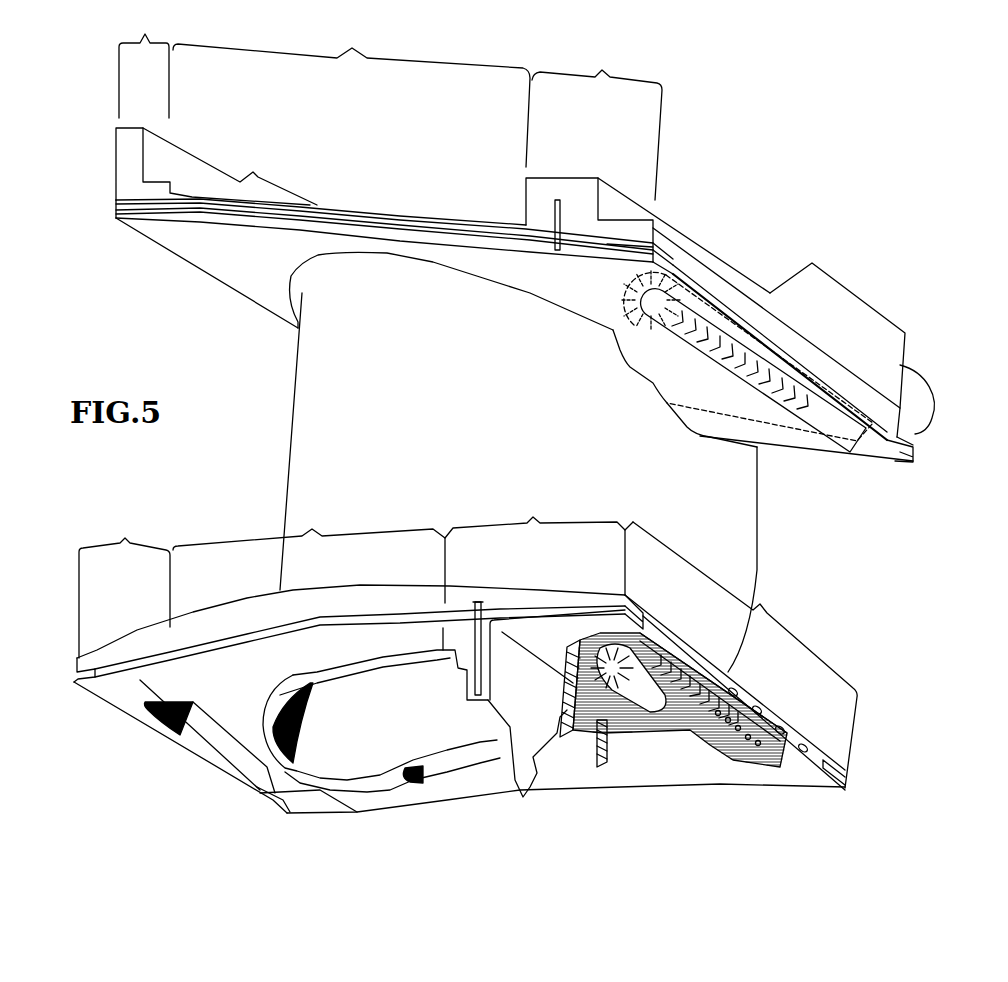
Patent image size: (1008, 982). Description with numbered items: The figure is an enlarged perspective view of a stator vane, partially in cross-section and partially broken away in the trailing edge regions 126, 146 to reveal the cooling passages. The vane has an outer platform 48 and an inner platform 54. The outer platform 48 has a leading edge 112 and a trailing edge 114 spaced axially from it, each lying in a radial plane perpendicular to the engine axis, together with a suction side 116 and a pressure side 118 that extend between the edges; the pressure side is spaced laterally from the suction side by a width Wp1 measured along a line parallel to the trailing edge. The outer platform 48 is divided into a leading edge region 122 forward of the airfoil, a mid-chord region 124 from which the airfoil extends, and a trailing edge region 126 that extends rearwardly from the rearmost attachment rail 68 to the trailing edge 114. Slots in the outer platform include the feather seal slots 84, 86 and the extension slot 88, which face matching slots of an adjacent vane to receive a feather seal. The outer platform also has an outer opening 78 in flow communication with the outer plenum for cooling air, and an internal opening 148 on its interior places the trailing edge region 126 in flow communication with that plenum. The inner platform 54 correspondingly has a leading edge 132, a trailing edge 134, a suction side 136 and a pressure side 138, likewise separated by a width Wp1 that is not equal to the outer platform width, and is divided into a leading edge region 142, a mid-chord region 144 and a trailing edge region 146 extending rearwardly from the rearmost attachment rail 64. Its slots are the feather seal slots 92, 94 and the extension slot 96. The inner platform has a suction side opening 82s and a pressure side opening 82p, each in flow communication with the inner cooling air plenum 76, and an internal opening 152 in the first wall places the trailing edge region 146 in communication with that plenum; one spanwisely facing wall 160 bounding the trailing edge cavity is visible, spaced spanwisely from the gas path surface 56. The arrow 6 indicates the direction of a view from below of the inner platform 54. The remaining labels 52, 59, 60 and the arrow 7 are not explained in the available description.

The outer platform 48 is at (127, 282).
The base plate 52 is at (240, 275).
The inner platform 54 is at (118, 505).
The gas path surface 56 is at (353, 587).
The cylindrical body 59 is at (292, 393).
The side wall 60 is at (755, 488).
The rearmost attachment rail 64 is at (537, 702).
The rearmost attachment rail 68 is at (720, 265).
The inner cooling air plenum 76 is at (518, 843).
The outer opening 78 is at (413, 215).
The suction side opening 82s is at (357, 758).
The pressure side opening 82p is at (478, 763).
The feather seal slot 84 is at (557, 200).
The feather seal slot 86 is at (465, 230).
The extension slot 88 is at (610, 247).
The feather seal slot 92 is at (460, 667).
The feather seal slot 94 is at (207, 648).
The extension slot 96 is at (555, 610).
The leading edge 112 is at (113, 212).
The trailing edge 114 is at (657, 243).
The suction side 116 is at (375, 235).
The pressure side 118 is at (900, 368).
The leading edge region 122 is at (144, 62).
The mid-chord region 124 is at (351, 97).
The trailing edge region 126 is at (597, 122).
The leading edge 132 is at (155, 735).
The trailing edge 134 is at (817, 755).
The suction side 136 is at (327, 618).
The pressure side 138 is at (777, 788).
The leading edge region 142 is at (124, 588).
The mid-chord region 144 is at (309, 553).
The trailing edge region 146 is at (539, 516).
The internal opening 148 is at (662, 387).
The internal opening 152 is at (598, 722).
The spanwisely facing wall 160 is at (648, 700).
The platform width Wp1 is at (745, 655).
The view direction arrow 6 is at (670, 780).
The section view arrow 7 is at (762, 240).